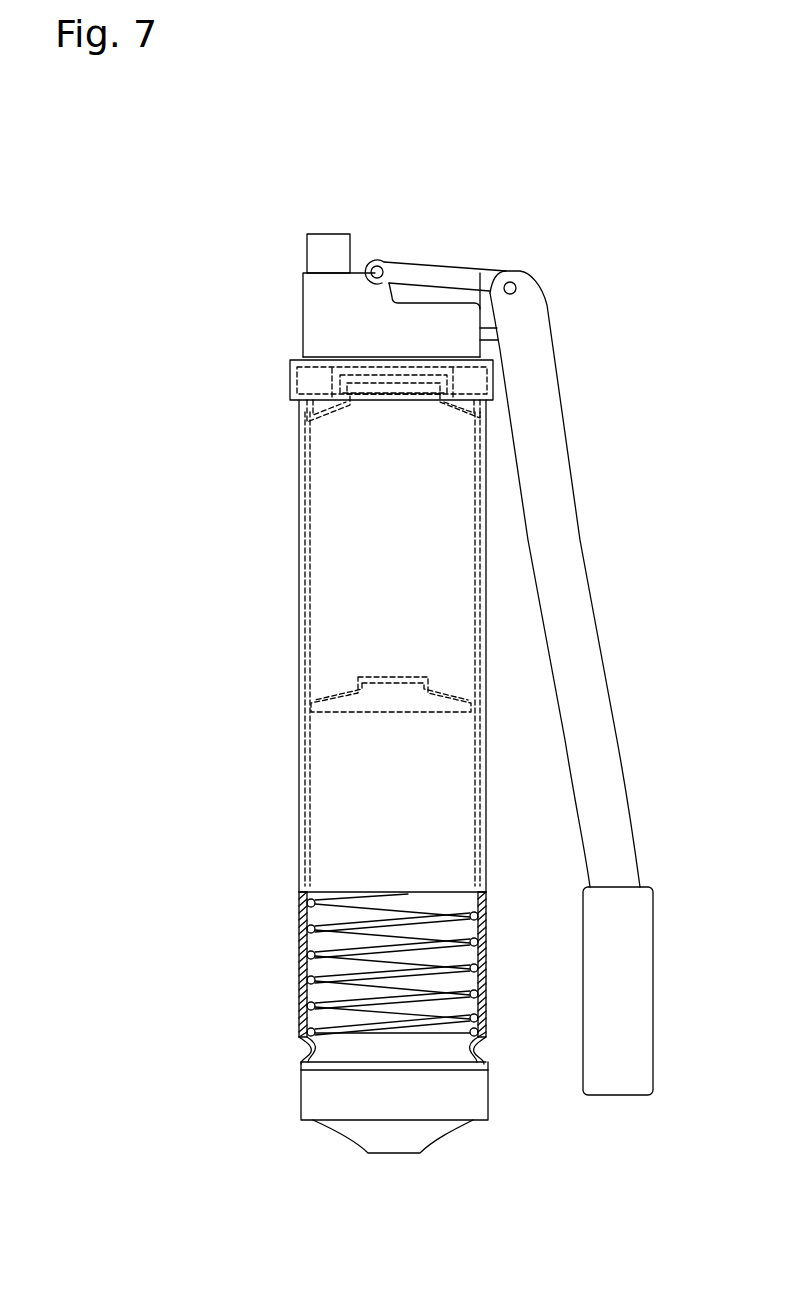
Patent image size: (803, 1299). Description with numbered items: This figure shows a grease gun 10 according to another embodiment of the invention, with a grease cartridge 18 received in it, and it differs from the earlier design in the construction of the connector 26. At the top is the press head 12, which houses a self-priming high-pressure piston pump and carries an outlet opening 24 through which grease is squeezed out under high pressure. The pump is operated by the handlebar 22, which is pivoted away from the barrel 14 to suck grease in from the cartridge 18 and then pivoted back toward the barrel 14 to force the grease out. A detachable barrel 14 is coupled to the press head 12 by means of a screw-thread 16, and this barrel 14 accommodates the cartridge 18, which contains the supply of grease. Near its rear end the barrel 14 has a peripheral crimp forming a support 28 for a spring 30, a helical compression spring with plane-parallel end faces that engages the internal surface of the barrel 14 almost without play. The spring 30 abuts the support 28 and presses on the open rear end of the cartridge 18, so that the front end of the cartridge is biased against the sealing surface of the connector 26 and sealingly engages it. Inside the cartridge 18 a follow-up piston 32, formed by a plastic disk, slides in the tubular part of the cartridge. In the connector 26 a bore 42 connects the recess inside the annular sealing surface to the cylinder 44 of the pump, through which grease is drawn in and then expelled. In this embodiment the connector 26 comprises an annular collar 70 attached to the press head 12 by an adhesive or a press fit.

The grease gun 10 is at (160, 536).
The press head 12 is at (320, 296).
The barrel 14 is at (298, 673).
The screw-thread 16 is at (290, 380).
The cartridge 18 is at (300, 480).
The handlebar 22 is at (567, 530).
The outlet opening 24 is at (330, 245).
The connector 26 is at (478, 386).
The support 28 is at (305, 1050).
The spring 30 is at (308, 955).
The follow-up piston 32 is at (399, 676).
The bore 42 is at (467, 417).
The cylinder 44 is at (353, 387).
The annular collar 70 is at (332, 388).